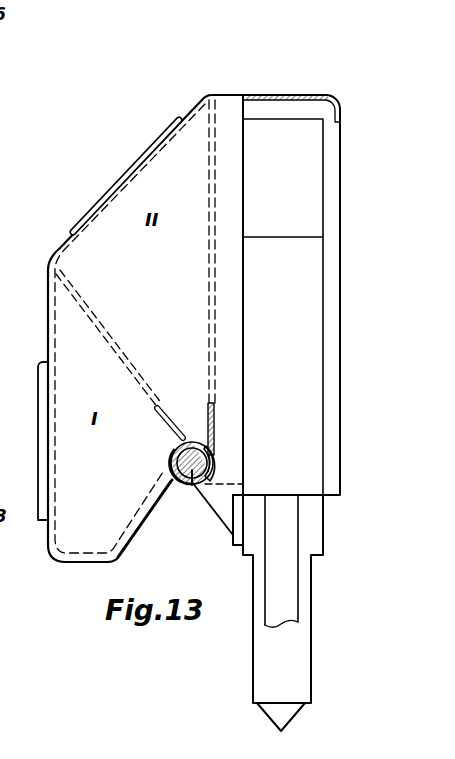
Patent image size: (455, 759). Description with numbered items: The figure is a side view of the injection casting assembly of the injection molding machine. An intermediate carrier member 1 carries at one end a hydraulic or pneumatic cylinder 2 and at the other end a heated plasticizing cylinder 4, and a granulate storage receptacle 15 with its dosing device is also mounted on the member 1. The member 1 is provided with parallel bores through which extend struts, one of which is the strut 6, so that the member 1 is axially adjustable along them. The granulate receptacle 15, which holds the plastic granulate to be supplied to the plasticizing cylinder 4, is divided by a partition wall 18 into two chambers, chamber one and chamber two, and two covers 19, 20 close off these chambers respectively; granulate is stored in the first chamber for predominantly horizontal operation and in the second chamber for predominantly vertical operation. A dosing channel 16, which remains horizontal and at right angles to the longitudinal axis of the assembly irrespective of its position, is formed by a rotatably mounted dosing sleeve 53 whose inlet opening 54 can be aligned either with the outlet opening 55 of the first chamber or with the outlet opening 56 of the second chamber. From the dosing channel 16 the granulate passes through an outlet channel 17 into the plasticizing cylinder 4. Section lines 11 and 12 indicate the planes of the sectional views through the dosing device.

The intermediate carrier member 1 is at (310, 556).
The hydraulic or pneumatic cylinder 2 is at (318, 212).
The plasticizing cylinder 4 is at (303, 670).
The strut 6 is at (290, 600).
The section line XI-XI 11 is at (105, 462).
The section line XII-XII 12 is at (193, 118).
The granulate storage receptacle 15 is at (0, 112).
The dosing channel 16 is at (205, 468).
The outlet channel 17 is at (224, 509).
The partition wall 18 is at (62, 290).
The cover 19 is at (43, 385).
The cover 20 is at (108, 190).
The dosing sleeve 53 is at (170, 487).
The inlet opening 54 is at (173, 466).
The outlet opening 55 is at (170, 460).
The outlet opening 56 is at (192, 432).